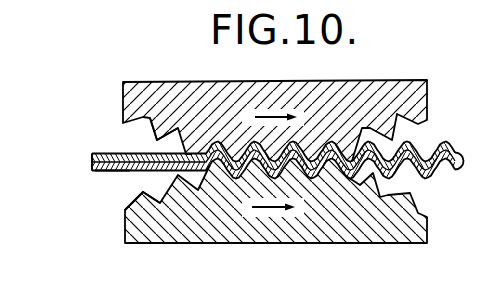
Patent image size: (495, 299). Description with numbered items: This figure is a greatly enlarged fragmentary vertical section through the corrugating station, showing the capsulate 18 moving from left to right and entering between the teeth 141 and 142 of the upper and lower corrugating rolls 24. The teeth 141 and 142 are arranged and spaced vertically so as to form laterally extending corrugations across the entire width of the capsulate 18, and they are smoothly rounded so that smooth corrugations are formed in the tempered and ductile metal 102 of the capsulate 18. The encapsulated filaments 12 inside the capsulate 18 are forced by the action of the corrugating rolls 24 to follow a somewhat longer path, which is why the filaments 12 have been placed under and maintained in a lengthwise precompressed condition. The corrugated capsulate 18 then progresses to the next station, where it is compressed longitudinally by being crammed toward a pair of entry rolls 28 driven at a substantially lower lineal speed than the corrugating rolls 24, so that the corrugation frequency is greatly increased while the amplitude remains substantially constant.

The corrugating rolls 24 is at (386, 83).
The entry rolls 28 is at (388, 232).
The encapsulated filaments 12 is at (92, 163).
The tempered and ductile metal 102 is at (92, 153).
The teeth of the upper corrugating roll 141 is at (159, 133).
The teeth of the lower corrugating roll 142 is at (140, 193).
The capsulate 18 is at (106, 178).